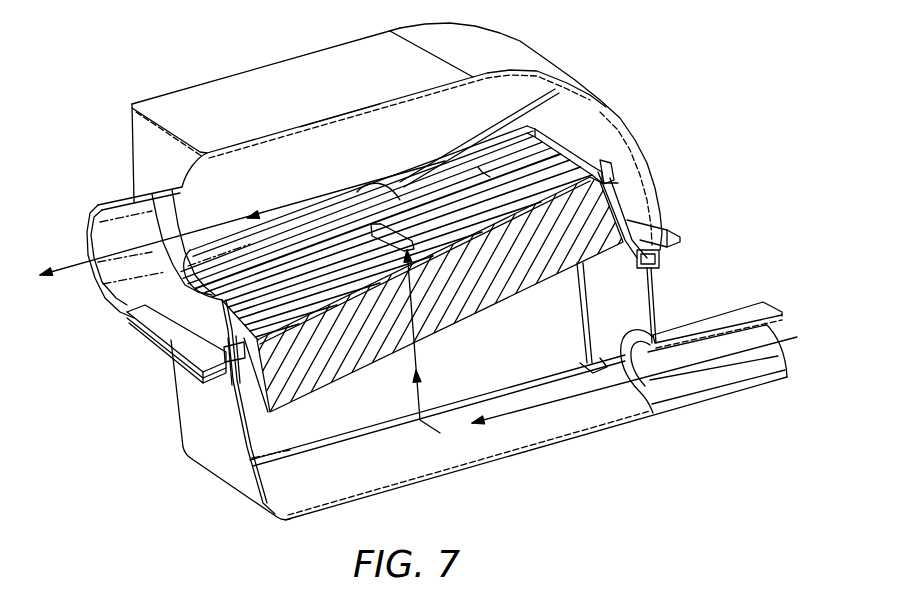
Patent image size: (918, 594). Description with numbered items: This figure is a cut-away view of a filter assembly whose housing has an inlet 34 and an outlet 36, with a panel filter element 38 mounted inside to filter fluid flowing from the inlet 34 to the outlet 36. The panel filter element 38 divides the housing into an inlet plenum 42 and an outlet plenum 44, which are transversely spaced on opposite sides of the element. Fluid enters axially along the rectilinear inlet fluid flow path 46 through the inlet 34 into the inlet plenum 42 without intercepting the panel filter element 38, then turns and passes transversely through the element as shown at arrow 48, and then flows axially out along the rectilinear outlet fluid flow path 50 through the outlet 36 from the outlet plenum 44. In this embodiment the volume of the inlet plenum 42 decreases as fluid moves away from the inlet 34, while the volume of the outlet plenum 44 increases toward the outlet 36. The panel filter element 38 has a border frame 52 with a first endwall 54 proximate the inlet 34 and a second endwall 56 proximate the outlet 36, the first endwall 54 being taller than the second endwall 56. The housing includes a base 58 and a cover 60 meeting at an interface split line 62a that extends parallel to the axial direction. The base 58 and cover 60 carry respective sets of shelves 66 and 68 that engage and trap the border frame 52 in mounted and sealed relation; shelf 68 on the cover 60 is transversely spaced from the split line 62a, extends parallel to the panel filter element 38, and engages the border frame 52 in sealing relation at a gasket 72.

The inlet 34 is at (779, 312).
The outlet 36 is at (90, 242).
The panel filter element 38 is at (350, 384).
The inlet plenum 42 is at (310, 495).
The outlet plenum 44 is at (405, 130).
The rectilinear inlet fluid flow path 46 is at (548, 402).
The arrow 48 is at (417, 350).
The rectilinear outlet fluid flow path 50 is at (68, 278).
The border frame 52 is at (620, 183).
The first endwall 54 is at (613, 220).
The second endwall 56 is at (233, 383).
The base 58 is at (385, 492).
The cover 60 is at (271, 66).
The interface split line 62a is at (677, 237).
The shelves 66 is at (657, 262).
The shelf 68 is at (597, 137).
The gasket 72 is at (607, 160).